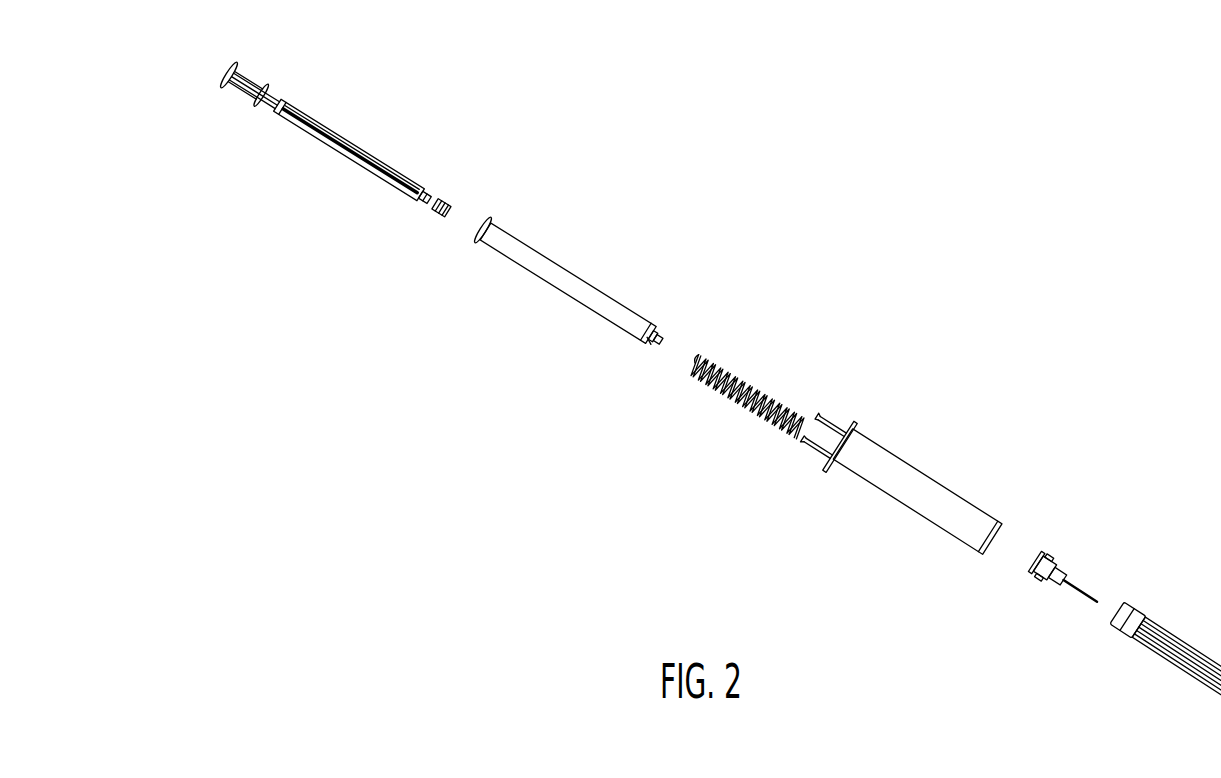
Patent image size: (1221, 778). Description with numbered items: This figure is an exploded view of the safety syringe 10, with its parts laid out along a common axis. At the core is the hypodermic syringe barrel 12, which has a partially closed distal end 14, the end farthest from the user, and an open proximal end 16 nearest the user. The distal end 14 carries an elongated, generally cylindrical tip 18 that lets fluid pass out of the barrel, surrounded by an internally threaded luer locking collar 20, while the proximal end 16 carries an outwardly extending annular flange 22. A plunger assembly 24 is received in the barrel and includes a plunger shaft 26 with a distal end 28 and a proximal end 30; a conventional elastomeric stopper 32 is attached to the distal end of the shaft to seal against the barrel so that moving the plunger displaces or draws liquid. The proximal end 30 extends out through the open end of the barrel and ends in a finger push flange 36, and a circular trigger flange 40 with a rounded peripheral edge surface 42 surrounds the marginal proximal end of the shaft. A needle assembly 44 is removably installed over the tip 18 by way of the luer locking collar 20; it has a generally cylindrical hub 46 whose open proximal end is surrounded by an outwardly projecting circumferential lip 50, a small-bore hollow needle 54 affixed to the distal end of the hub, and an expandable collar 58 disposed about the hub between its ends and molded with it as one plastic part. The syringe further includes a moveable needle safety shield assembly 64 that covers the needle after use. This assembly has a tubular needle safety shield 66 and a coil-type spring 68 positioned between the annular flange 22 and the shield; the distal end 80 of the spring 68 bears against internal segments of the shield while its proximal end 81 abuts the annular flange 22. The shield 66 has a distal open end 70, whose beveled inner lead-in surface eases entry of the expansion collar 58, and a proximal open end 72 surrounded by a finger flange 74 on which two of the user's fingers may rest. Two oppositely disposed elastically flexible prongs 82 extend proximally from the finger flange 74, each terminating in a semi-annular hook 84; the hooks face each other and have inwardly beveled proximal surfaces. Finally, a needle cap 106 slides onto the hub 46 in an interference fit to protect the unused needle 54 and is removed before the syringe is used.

The syringe 10 is at (623, 260).
The hypodermic syringe barrel 12 is at (573, 292).
The distal end 14 is at (658, 340).
The proximal end 16 is at (483, 230).
The tip 18 is at (653, 336).
The luer locking collar 20 is at (649, 340).
The annular flange 22 is at (568, 283).
The plunger assembly 24 is at (349, 149).
The plunger shaft 26 is at (351, 149).
The distal end 28 is at (425, 197).
The proximal end 30 is at (221, 76).
The elastomeric stopper 32 is at (441, 208).
The finger push flange 36 is at (229, 75).
The trigger flange 40 is at (261, 95).
The rounded peripheral edge surface 42 is at (254, 91).
The needle assembly 44 is at (1041, 584).
The hub 46 is at (1057, 576).
The circumferential lip 50 is at (1036, 562).
The hollow needle 54 is at (1080, 591).
The expandable collar 58 is at (1044, 567).
The needle safety shield assembly 64 is at (897, 447).
The tubular needle safety shield 66 is at (917, 491).
The coil-type spring 68 is at (735, 387).
The distal open end 70 is at (987, 536).
The proximal open end 72 is at (825, 437).
The finger flange 74 is at (840, 446).
The distal end 80 is at (824, 436).
The proximal end 81 is at (696, 358).
The elastically flexible prongs 82 is at (825, 437).
The semi-annular hook 84 is at (816, 415).
The needle cap 106 is at (1130, 622).